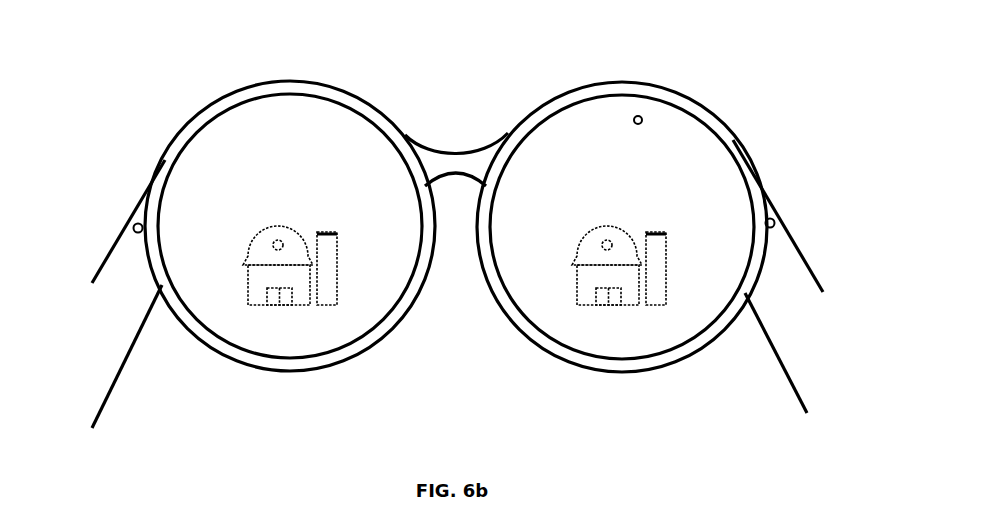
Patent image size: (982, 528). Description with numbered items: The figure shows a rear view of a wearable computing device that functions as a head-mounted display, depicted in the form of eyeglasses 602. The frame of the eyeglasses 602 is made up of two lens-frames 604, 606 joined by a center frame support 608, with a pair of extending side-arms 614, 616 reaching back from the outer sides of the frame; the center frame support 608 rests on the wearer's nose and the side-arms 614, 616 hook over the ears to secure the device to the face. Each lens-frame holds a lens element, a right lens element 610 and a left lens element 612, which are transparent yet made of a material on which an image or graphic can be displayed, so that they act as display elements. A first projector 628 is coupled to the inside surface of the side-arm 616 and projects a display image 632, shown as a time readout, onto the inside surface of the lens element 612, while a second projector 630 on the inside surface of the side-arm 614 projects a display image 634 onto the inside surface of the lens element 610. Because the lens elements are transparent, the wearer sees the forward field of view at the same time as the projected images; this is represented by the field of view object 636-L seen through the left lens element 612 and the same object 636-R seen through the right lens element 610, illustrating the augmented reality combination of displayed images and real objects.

The eyeglasses 602 is at (458, 233).
The lens-frame 604 is at (700, 348).
The lens-frame 606 is at (185, 327).
The center frame support 608 is at (440, 150).
The lens element 610 is at (630, 343).
The lens element 612 is at (303, 343).
The extending side-arm 614 is at (808, 262).
The extending side-arm 616 is at (120, 382).
The first projector 628 is at (137, 222).
The second projector 630 is at (768, 207).
The display image 632 is at (277, 141).
The display image 634 is at (638, 125).
The field of view object 636-L is at (240, 256).
The field of view object 636-R is at (583, 257).